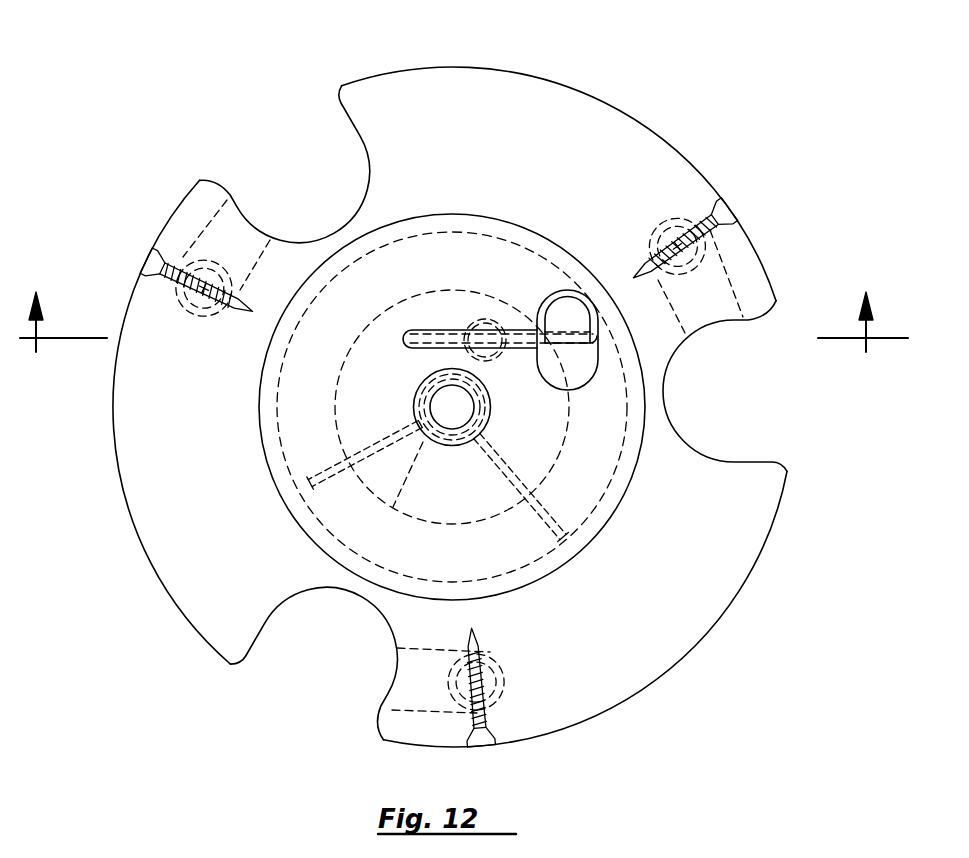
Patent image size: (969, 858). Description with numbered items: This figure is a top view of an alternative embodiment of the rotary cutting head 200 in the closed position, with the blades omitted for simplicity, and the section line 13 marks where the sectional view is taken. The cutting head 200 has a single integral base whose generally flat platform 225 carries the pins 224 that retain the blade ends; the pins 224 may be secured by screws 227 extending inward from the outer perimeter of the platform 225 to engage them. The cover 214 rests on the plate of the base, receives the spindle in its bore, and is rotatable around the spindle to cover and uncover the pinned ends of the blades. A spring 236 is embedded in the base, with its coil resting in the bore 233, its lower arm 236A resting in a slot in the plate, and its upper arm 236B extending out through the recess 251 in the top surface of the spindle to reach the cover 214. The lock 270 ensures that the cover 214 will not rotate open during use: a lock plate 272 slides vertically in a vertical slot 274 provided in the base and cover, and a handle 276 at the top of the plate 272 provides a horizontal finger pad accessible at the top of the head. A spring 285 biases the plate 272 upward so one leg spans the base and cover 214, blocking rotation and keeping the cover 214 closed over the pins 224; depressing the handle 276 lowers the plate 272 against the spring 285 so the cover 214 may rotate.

The cutting head 200 is at (418, 376).
The cover 214 is at (456, 90).
The platform 225 is at (303, 150).
The pins 224 is at (207, 260).
The screws 227 is at (140, 258).
The bore 233 is at (466, 408).
The spring 236 is at (443, 457).
The lower arm 236A is at (306, 481).
The upper arm 236B is at (560, 529).
The recess 251 is at (383, 469).
The lock 270 is at (555, 281).
The plate 272 is at (433, 332).
The vertical slot 274 is at (452, 313).
The handle 276 is at (572, 317).
The spring 285 is at (477, 317).
The section line for FIG. 13 is at (54, 386).